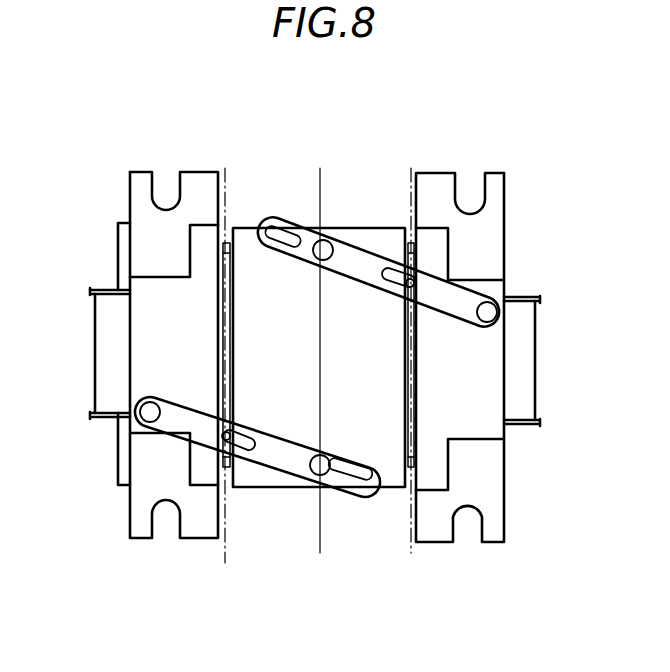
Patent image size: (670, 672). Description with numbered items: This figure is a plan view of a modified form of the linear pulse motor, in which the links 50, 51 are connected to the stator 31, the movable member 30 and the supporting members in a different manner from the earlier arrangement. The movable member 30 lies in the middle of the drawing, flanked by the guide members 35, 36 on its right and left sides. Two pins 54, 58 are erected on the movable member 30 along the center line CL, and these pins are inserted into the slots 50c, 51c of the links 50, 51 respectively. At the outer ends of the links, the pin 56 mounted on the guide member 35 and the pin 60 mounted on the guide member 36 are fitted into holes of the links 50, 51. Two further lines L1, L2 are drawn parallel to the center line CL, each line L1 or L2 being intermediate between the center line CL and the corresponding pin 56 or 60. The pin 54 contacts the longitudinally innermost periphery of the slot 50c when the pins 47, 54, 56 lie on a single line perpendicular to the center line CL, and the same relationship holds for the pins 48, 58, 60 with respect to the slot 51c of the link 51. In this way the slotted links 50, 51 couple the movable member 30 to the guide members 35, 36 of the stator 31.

The movable member 30 is at (272, 484).
The stator 31 is at (500, 548).
The guide member 35 is at (492, 427).
The guide member 36 is at (138, 343).
The pin 47 is at (404, 288).
The pin 48 is at (238, 433).
The link 50 is at (350, 243).
The slot 50c is at (292, 235).
The link 51 is at (361, 494).
The slot 51c is at (360, 471).
The pin 54 is at (318, 257).
The pin 56 is at (480, 318).
The pin 58 is at (327, 455).
The pin 60 is at (153, 410).
The line L1 is at (412, 377).
The line L2 is at (224, 379).
The center line CL is at (318, 545).